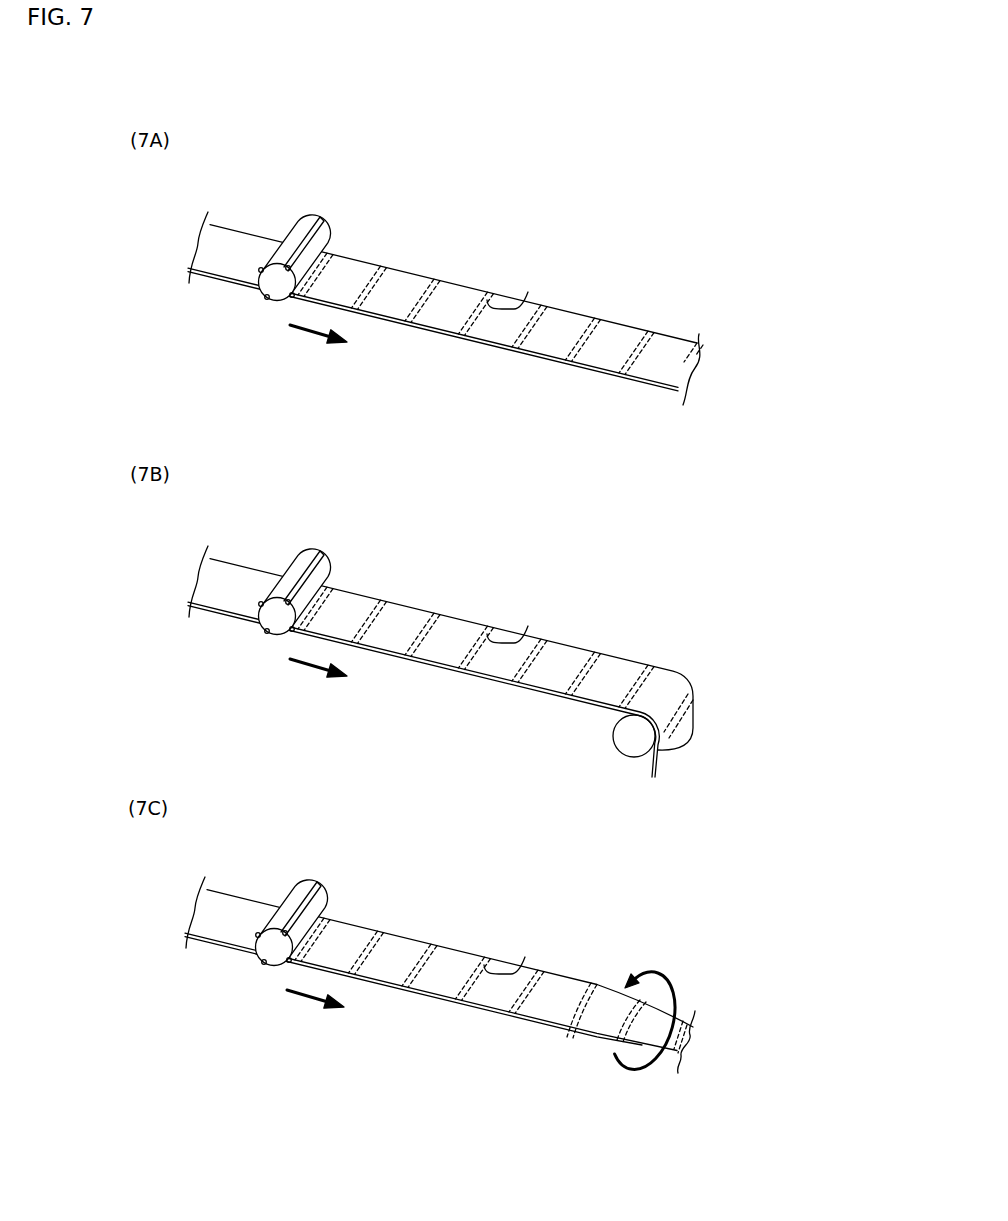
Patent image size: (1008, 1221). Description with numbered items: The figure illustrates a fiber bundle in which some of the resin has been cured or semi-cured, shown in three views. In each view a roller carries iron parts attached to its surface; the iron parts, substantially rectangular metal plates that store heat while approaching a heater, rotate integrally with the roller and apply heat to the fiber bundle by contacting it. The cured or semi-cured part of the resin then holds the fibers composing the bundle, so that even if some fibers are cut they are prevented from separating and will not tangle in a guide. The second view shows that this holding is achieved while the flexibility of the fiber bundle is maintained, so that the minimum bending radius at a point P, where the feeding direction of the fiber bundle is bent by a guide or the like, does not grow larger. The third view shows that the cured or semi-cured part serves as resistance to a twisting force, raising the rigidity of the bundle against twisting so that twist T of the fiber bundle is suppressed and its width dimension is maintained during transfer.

The point P is at (675, 689).
The twist direction T is at (645, 1004).